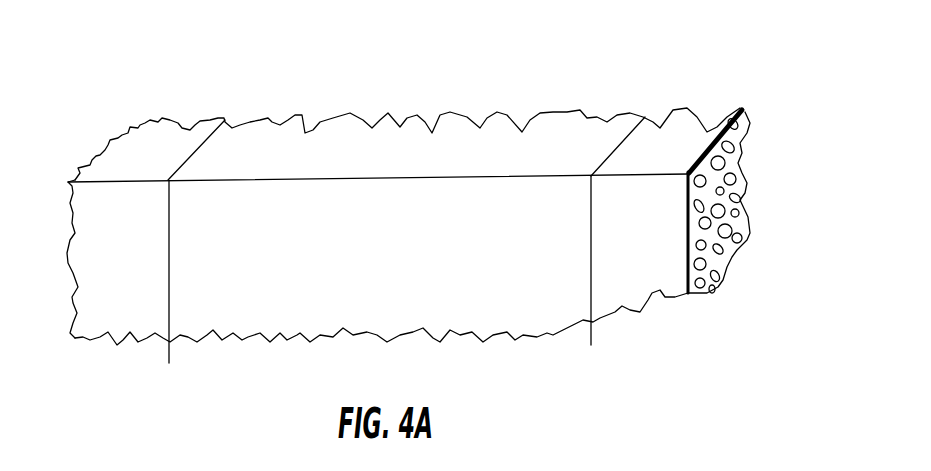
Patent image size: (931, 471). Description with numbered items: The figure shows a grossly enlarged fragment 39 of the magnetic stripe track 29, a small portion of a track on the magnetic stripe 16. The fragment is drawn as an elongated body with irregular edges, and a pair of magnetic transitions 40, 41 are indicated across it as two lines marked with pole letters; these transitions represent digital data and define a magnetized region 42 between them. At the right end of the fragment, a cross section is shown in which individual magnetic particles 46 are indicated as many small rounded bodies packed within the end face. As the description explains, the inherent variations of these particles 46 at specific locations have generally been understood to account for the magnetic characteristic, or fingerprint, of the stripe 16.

The magnetic stripe track 29 is at (581, 69).
The stripe 16 is at (417, 113).
The fragment 39 is at (92, 160).
The magnetic transition 40 is at (169, 363).
The magnetic transition 41 is at (591, 345).
The magnetized region 42 is at (352, 320).
The magnetic particles 46 is at (745, 153).